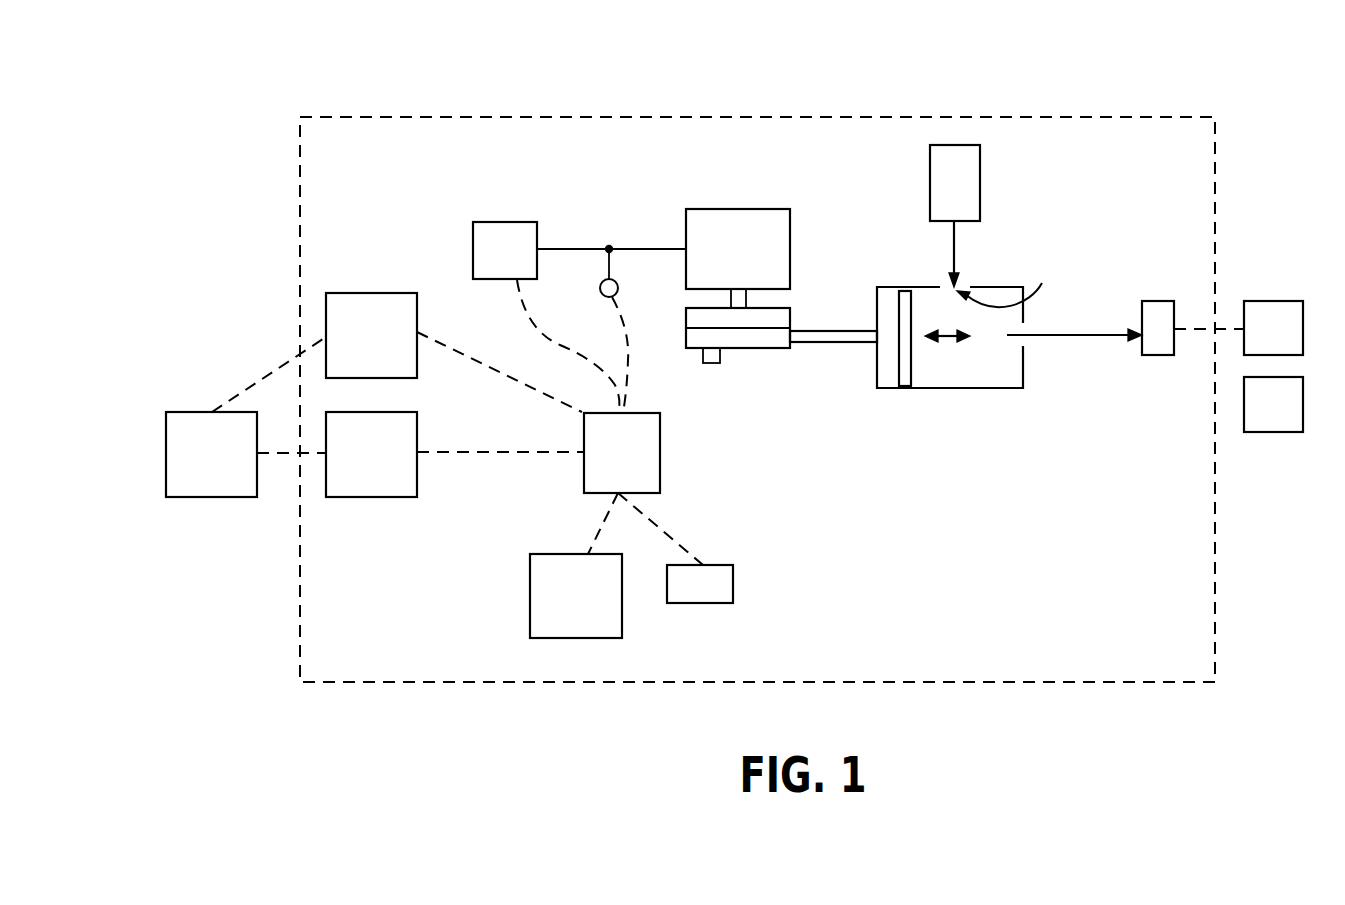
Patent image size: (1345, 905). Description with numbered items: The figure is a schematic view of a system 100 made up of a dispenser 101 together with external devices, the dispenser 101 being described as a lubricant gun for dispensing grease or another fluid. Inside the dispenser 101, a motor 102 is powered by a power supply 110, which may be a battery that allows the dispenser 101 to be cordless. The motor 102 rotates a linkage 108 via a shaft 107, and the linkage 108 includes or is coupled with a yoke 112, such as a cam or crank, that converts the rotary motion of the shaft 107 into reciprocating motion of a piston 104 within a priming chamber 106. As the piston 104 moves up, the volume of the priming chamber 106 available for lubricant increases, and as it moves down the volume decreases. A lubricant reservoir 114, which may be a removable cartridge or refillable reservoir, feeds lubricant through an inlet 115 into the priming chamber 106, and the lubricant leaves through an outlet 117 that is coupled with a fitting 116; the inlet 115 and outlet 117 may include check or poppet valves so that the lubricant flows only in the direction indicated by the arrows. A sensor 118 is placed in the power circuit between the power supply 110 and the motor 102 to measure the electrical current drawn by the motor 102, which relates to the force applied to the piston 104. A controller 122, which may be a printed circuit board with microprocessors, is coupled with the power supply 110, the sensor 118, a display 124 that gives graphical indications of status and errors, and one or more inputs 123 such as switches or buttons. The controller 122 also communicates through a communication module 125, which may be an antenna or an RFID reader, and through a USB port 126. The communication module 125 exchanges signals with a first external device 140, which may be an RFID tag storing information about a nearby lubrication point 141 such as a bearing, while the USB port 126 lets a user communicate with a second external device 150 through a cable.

The system 100 is at (420, 63).
The dispenser 101 is at (1160, 117).
The motor 102 is at (752, 209).
The piston 104 is at (907, 370).
The priming chamber 106 is at (967, 364).
The shaft 107 is at (747, 300).
The linkage 108 is at (686, 313).
The power supply 110 is at (488, 263).
The yoke 112 is at (765, 348).
The lubricant reservoir 114 is at (980, 172).
The inlet 115 is at (1011, 281).
The fitting 116 is at (1158, 301).
The outlet 117 is at (1038, 350).
The sensor 118 is at (600, 297).
The controller 122 is at (605, 465).
The inputs 123 is at (733, 583).
The display 124 is at (559, 602).
The communication module 125 is at (354, 467).
The USB port 126 is at (354, 348).
The first external device 140 is at (1256, 416).
The lubrication point 141 is at (1256, 340).
The second external device 150 is at (194, 467).